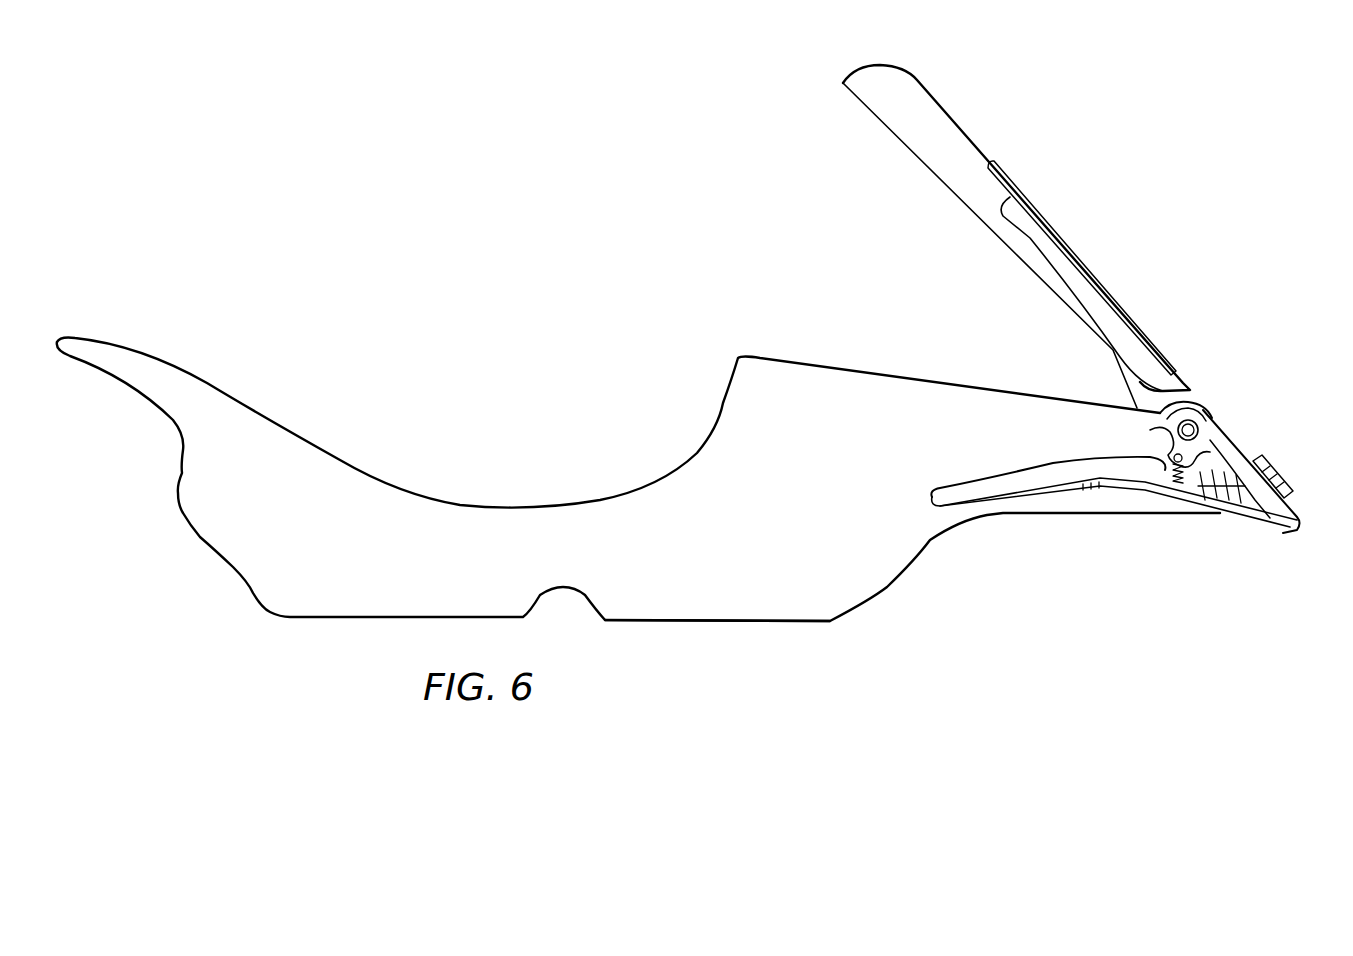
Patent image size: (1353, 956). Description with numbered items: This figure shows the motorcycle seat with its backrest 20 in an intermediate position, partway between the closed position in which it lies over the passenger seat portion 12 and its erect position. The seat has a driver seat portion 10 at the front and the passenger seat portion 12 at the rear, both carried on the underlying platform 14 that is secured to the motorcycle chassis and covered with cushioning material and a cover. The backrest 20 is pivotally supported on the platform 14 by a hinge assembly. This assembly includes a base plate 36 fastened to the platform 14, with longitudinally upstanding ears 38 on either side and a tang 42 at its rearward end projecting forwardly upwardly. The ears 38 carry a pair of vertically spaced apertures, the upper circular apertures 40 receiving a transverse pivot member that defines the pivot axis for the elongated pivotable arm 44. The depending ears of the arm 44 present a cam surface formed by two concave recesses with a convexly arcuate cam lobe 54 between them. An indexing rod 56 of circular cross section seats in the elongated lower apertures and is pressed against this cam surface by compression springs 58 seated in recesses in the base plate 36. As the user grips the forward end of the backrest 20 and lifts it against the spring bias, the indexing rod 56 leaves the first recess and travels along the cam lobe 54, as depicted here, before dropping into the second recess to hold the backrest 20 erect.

The driver seat portion 10 is at (350, 467).
The passenger seat portion 12 is at (743, 622).
The platform 14 is at (1140, 492).
The backrest 20 is at (1093, 241).
The base plate 36 is at (1063, 490).
The ears 38 is at (1210, 430).
The apertures 40 is at (1193, 420).
The tang 42 is at (1290, 487).
The pivotable arm 44 is at (1120, 333).
The cam lobe 54 is at (1150, 430).
The indexing rod 56 is at (1167, 497).
The compression springs 58 is at (1200, 484).